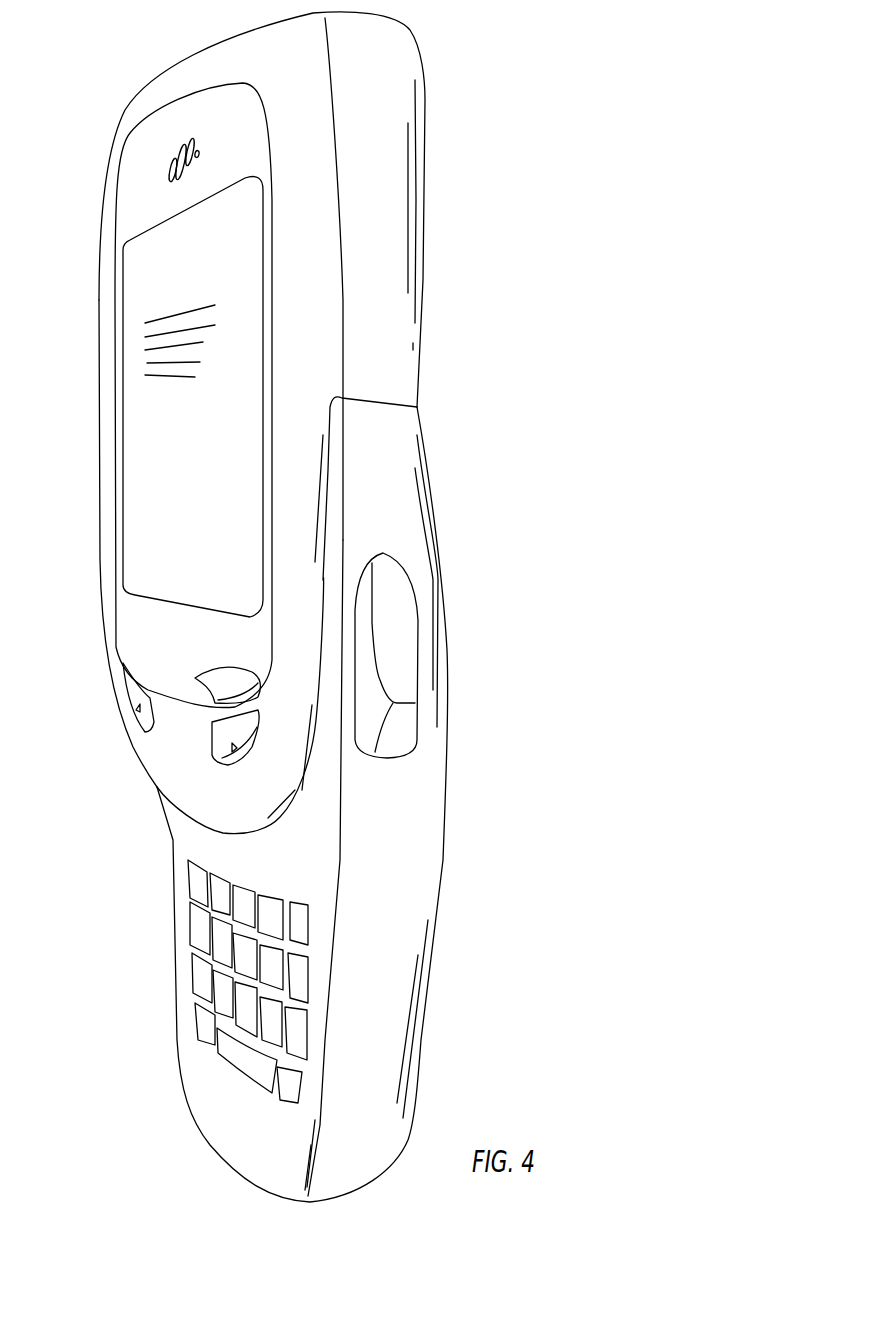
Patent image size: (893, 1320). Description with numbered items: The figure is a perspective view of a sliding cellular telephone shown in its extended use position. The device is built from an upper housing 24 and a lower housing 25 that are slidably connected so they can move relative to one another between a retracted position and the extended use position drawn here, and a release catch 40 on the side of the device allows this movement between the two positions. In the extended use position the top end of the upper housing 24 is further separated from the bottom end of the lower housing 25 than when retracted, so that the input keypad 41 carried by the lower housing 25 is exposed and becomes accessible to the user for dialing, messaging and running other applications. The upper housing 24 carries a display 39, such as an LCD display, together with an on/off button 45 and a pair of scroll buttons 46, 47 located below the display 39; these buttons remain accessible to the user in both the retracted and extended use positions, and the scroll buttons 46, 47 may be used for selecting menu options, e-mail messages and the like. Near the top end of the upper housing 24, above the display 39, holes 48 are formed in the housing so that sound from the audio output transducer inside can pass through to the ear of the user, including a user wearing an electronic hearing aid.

The upper housing 24 is at (410, 103).
The lower housing 25 is at (430, 842).
The display 39 is at (150, 443).
The release catch 40 is at (403, 650).
The input keypad 41 is at (185, 945).
The on/off button 45 is at (220, 678).
The scroll button 46 is at (133, 690).
The scroll button 47 is at (220, 747).
The holes 48 is at (177, 152).